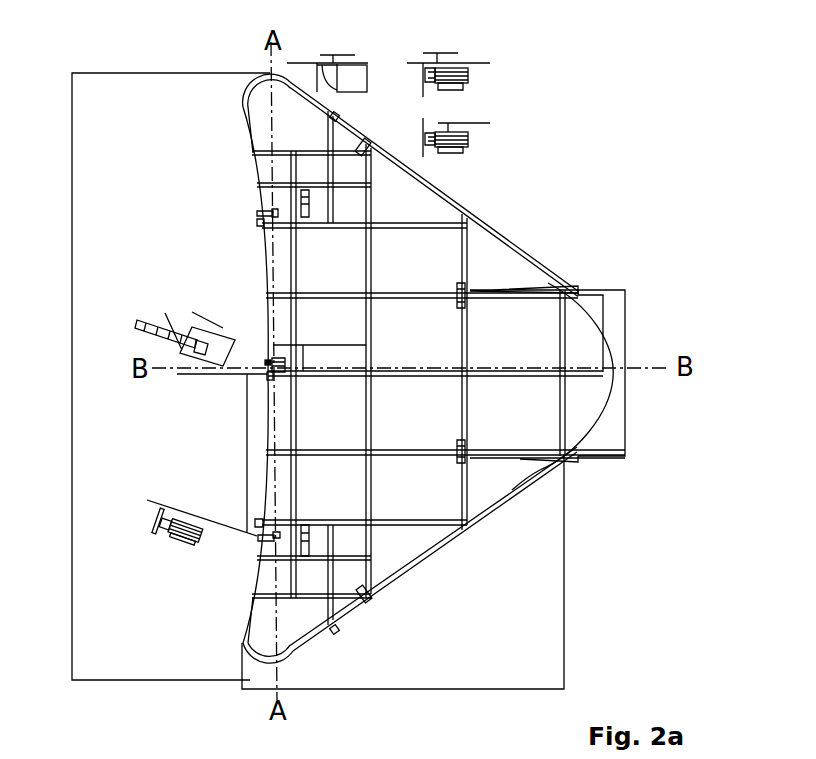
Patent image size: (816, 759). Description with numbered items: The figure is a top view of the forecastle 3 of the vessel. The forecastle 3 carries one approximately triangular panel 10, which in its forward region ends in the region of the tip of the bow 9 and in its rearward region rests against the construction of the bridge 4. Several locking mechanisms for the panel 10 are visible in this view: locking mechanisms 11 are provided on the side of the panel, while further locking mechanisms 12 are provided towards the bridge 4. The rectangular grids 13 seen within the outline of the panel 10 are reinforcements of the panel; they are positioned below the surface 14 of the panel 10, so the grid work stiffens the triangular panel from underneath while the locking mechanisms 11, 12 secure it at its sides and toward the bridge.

The forecastle 3 is at (440, 247).
The bridge 4 is at (245, 135).
The bow 9 is at (610, 342).
The panel 10 is at (513, 277).
The locking mechanisms 11 is at (367, 142).
The locking mechanisms 12 is at (257, 220).
The rectangular grids 13 is at (420, 455).
The surface 14 is at (523, 420).